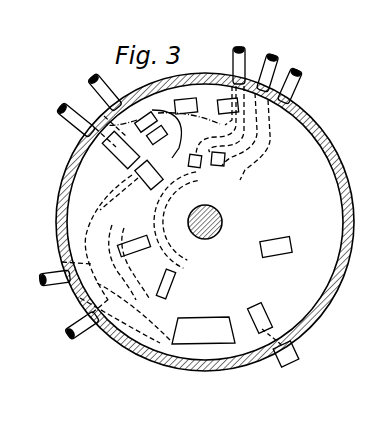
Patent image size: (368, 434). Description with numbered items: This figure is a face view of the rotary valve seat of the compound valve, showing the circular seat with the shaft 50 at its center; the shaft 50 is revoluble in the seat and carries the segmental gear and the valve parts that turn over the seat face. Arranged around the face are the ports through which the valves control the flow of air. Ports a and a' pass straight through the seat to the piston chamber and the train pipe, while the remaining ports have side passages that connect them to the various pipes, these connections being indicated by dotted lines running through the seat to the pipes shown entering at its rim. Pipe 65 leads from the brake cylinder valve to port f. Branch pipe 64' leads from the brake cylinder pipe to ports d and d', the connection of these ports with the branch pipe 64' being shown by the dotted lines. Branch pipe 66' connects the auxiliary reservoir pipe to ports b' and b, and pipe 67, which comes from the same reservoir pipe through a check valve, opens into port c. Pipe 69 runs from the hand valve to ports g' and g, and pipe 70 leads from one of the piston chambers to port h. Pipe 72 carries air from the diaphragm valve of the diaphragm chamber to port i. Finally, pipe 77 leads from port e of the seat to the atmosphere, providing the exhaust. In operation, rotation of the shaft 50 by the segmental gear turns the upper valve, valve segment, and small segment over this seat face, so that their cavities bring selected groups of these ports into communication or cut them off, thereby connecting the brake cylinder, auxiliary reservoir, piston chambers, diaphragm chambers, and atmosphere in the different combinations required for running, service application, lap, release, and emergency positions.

The pipe 65 is at (74, 122).
The pipe 72 is at (106, 97).
The pipe 69 is at (236, 63).
The branch pipe 66' is at (290, 68).
The pipe 70 is at (292, 88).
The branch pipe 64' is at (46, 266).
The pipe 67 is at (79, 338).
The pipe 77 is at (297, 352).
The shaft 50 is at (217, 232).
The port a is at (276, 238).
The port a' is at (182, 88).
The port g' is at (219, 107).
The port f is at (113, 160).
The port i is at (159, 137).
The port g is at (166, 142).
The port d' is at (146, 180).
The port b' is at (206, 174).
The port h is at (225, 165).
The port c is at (135, 240).
The port b is at (178, 284).
The port d is at (203, 321).
The port e is at (266, 314).